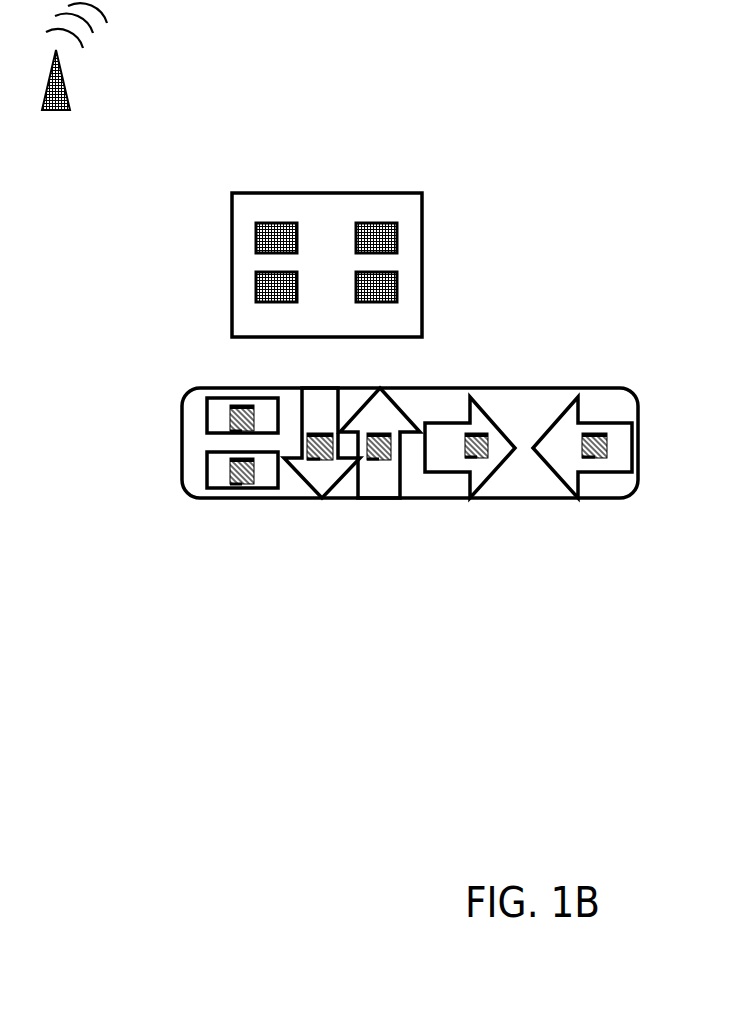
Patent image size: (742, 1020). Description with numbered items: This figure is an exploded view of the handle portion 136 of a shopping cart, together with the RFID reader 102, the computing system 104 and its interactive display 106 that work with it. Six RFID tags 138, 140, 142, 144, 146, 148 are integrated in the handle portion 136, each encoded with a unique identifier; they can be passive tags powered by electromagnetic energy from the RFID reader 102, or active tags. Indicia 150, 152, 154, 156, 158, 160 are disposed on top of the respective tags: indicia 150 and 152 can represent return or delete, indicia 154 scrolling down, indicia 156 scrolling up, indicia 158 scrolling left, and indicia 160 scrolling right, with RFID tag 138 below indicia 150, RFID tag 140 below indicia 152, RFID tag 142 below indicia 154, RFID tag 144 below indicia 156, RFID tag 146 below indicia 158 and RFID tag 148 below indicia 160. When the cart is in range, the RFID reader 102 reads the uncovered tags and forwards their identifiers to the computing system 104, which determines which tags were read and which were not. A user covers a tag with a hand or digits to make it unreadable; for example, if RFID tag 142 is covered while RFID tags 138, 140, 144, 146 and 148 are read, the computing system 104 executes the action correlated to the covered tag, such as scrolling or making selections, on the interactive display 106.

The RFID reader 102 is at (62, 80).
The computing system 104 is at (422, 223).
The interactive display 106 is at (397, 286).
The handle portion 136 is at (182, 410).
The RFID tag 138 is at (228, 418).
The RFID tag 140 is at (235, 487).
The RFID tag 142 is at (313, 462).
The RFID tag 144 is at (377, 463).
The RFID tag 146 is at (472, 460).
The RFID tag 148 is at (593, 458).
The indicia 150 is at (213, 402).
The indicia 152 is at (213, 485).
The indicia 154 is at (321, 494).
The indicia 156 is at (380, 407).
The indicia 158 is at (447, 473).
The indicia 160 is at (563, 428).